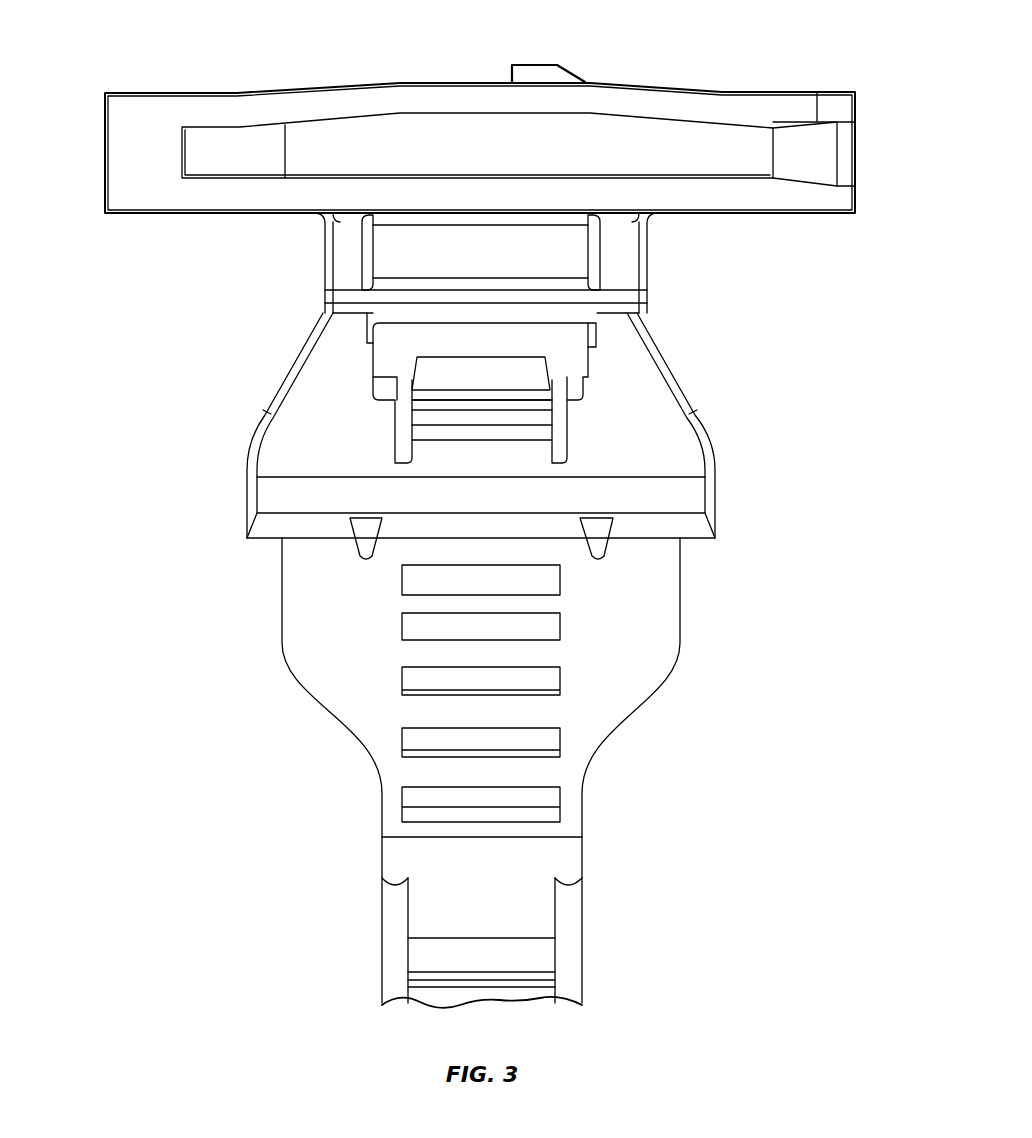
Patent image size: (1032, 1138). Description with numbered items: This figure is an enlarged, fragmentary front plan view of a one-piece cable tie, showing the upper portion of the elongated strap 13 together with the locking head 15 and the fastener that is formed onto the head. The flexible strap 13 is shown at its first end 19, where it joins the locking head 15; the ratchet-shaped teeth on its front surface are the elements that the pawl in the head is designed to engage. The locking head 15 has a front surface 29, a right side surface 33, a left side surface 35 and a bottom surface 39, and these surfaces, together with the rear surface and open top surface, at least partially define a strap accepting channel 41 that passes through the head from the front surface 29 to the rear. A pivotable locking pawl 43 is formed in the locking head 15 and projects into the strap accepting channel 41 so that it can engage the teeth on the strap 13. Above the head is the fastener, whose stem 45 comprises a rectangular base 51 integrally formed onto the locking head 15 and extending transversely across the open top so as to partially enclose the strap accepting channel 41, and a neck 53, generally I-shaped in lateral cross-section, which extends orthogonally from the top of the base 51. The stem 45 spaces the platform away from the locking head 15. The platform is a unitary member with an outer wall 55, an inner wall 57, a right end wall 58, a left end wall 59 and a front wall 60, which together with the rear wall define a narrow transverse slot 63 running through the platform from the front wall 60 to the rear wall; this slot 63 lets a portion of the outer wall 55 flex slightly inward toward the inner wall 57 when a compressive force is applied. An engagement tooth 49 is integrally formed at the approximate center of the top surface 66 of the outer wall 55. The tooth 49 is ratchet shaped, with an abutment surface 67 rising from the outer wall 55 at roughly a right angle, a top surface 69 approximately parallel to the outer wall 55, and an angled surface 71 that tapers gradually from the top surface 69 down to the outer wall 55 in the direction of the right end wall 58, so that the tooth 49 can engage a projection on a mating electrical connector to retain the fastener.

The elongated strap 13 is at (572, 921).
The locking head 15 is at (687, 455).
The first end 19 is at (305, 655).
The front surface 29 is at (287, 410).
The right side surface 33 is at (697, 400).
The left side surface 35 is at (247, 449).
The bottom surface 39 is at (697, 540).
The strap accepting channel 41 is at (543, 342).
The pivotable locking pawl 43 is at (428, 375).
The stem 45 is at (323, 238).
The engagement tooth 49 is at (525, 64).
The rectangular base 51 is at (547, 311).
The neck 53 is at (617, 240).
The outer wall 55 is at (345, 103).
The inner wall 57 is at (777, 195).
The right end wall 58 is at (855, 185).
The left end wall 59 is at (105, 143).
The front wall 60 is at (143, 113).
The transverse slot 63 is at (413, 145).
The top surface 66 is at (686, 90).
The abutment surface 67 is at (512, 76).
The top surface 69 is at (545, 64).
The angled surface 71 is at (575, 79).